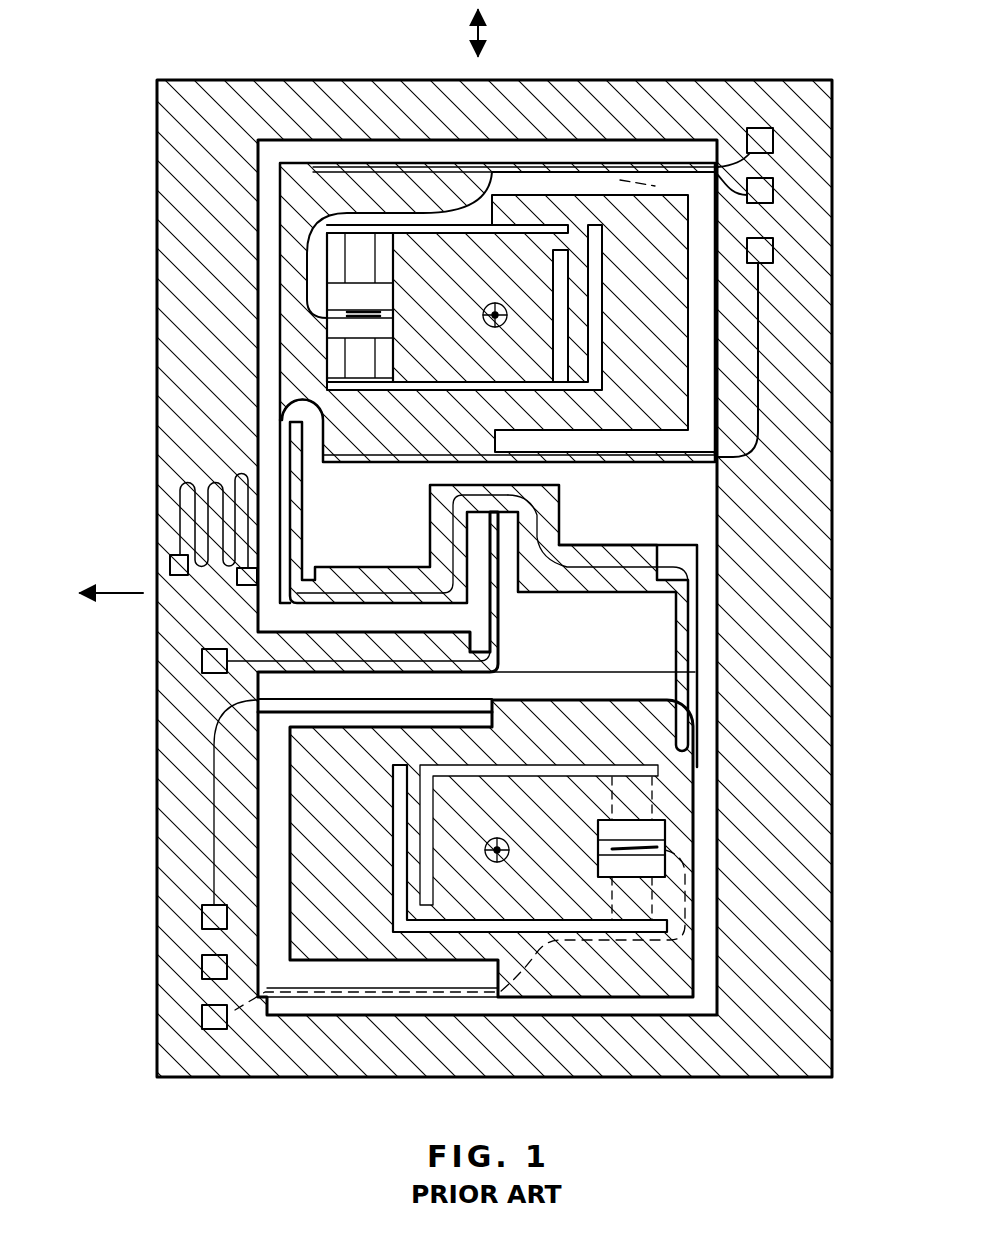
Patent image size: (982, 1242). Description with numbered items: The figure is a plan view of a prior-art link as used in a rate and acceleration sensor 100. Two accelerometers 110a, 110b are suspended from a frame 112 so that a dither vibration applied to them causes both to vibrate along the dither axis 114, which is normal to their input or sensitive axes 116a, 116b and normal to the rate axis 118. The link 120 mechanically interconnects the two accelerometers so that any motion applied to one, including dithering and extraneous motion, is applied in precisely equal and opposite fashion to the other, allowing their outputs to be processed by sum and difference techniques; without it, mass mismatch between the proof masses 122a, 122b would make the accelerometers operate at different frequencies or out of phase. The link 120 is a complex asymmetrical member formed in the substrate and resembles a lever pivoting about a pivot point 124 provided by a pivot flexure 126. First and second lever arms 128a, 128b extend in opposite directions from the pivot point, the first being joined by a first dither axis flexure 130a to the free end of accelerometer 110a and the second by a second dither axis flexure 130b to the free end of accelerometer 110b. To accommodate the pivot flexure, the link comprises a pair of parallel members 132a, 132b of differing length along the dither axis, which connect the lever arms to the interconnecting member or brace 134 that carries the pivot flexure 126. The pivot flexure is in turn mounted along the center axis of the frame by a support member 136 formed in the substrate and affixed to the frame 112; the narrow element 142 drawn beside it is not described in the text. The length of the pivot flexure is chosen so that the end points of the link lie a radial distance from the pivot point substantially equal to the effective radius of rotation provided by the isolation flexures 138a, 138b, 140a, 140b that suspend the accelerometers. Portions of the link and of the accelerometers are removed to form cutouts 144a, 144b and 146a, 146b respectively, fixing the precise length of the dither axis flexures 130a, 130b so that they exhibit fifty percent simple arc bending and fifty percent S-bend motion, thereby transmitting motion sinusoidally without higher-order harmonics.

The rate and acceleration sensor 100 is at (125, 910).
The first accelerometer 110a is at (276, 283).
The second accelerometer 110b is at (281, 807).
The frame 112 is at (197, 76).
The dither axis 114 is at (478, 33).
The input or sensitive axis 116a is at (497, 328).
The input or sensitive axis 116b is at (500, 862).
The rate axis 118 is at (115, 593).
The link 120 is at (444, 484).
The proof mass 122a is at (438, 362).
The proof mass 122b is at (536, 776).
The pivot point 124 is at (487, 580).
The pivot flexure 126 is at (505, 603).
The first lever arm 128a is at (372, 587).
The second lever arm 128b is at (587, 593).
The first dither axis flexure 130a is at (293, 527).
The second dither axis flexure 130b is at (700, 670).
The parallel member 132a is at (440, 512).
The parallel member 132b is at (548, 512).
The interconnecting member 134 is at (520, 480).
The support member 136 is at (282, 628).
The isolation flexure 138a is at (600, 170).
The isolation flexure 138b is at (430, 696).
The isolation flexure 140a is at (658, 465).
The isolation flexure 140b is at (457, 997).
The anchor flexure 142 is at (505, 635).
The cutout 144a is at (306, 585).
The cutout 144b is at (684, 655).
The cutout 146a is at (284, 440).
The cutout 146b is at (696, 728).